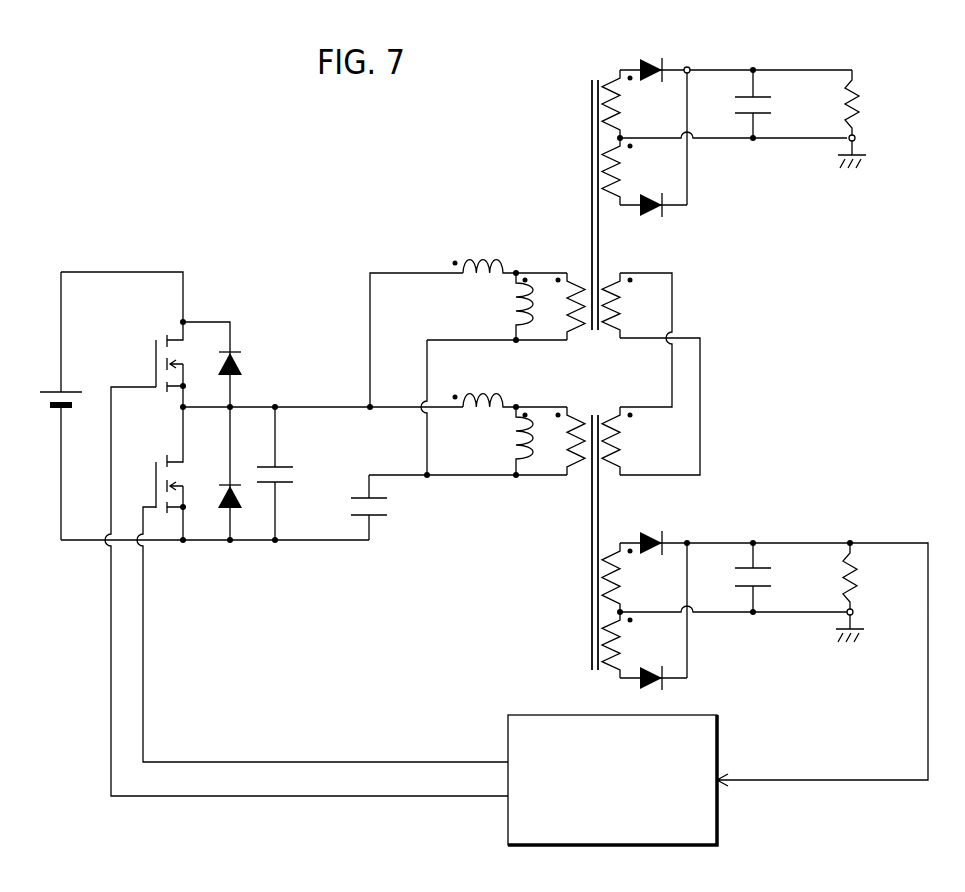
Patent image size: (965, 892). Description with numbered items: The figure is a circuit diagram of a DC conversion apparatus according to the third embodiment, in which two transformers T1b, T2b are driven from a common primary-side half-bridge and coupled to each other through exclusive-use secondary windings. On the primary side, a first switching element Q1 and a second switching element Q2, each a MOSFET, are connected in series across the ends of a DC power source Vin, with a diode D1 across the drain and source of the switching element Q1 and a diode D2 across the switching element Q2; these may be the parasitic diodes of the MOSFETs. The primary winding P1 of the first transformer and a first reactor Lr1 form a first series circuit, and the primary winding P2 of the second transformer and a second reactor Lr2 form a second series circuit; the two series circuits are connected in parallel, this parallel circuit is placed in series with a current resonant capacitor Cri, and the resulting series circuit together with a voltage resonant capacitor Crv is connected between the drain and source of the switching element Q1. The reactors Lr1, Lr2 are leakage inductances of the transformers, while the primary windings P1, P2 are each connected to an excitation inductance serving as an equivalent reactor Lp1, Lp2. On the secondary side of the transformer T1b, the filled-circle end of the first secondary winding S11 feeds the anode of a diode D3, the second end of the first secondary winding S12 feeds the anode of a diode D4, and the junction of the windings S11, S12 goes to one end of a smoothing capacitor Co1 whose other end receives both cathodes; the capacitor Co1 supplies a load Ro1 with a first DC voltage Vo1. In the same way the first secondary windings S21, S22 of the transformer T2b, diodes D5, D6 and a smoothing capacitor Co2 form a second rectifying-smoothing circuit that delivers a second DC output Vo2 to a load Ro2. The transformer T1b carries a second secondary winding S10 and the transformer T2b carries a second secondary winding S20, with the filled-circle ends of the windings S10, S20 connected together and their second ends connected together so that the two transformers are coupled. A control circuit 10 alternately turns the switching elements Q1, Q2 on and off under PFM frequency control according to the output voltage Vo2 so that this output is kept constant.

The DC power source Vin is at (70, 413).
The first switching element Q1 is at (320, 584).
The second switching element Q2 is at (306, 555).
The diode D1 is at (241, 473).
The diode D2 is at (224, 364).
The voltage resonant capacitor Crv is at (294, 473).
The current resonant capacitor Cri is at (387, 507).
The first reactor Lr1 is at (510, 252).
The second reactor Lr2 is at (510, 386).
The equivalent reactor Lp1 is at (505, 306).
The equivalent reactor Lp2 is at (505, 441).
The primary winding P1 is at (563, 306).
The primary winding P2 is at (563, 441).
The transformer T1b is at (598, 190).
The transformer T2b is at (599, 528).
The second secondary winding S10 is at (651, 374).
The second secondary winding S20 is at (632, 441).
The first secondary winding S11 is at (727, 136).
The first secondary winding S12 is at (644, 171).
The first secondary winding S21 is at (765, 664).
The first secondary winding S22 is at (644, 645).
The diode D3 is at (654, 58).
The diode D4 is at (654, 220).
The diode D5 is at (654, 530).
The diode D6 is at (668, 687).
The smoothing capacitor Co1 is at (776, 104).
The smoothing capacitor Co2 is at (776, 577).
The load Ro1 is at (872, 119).
The load Ro2 is at (871, 592).
The first DC voltage Vo1 is at (753, 70).
The second DC output Vo2 is at (753, 543).
The control circuit 10 is at (717, 812).